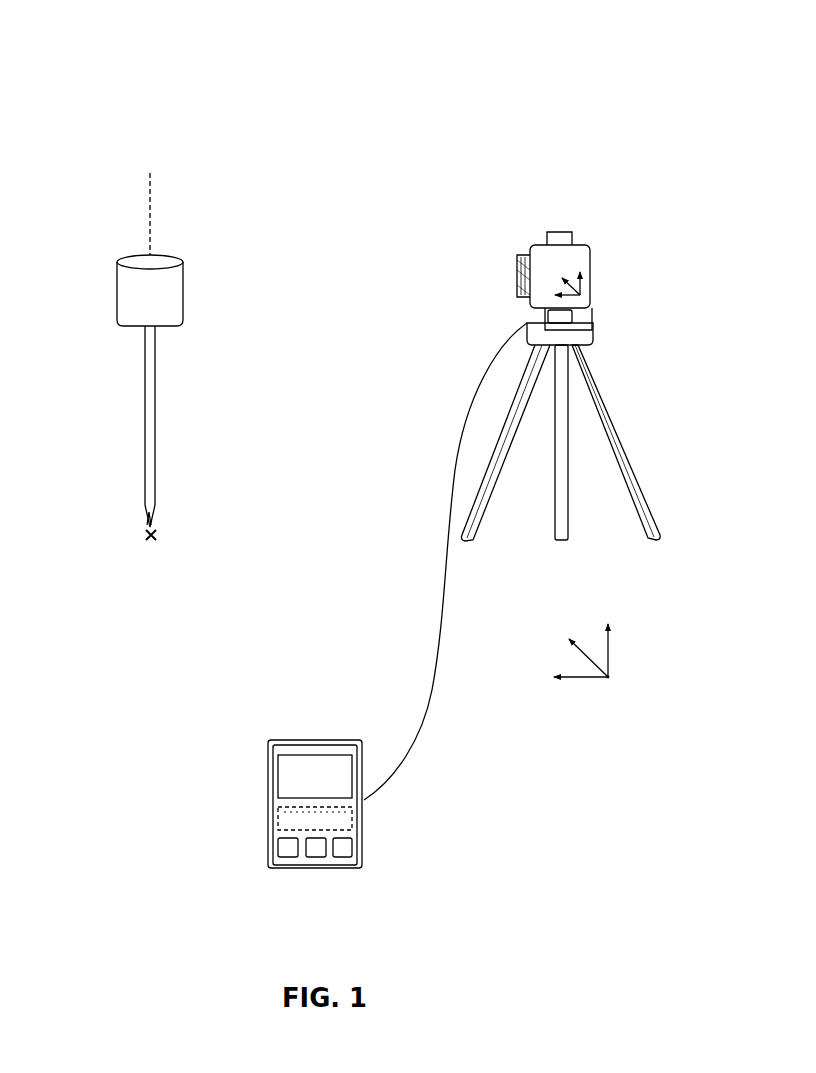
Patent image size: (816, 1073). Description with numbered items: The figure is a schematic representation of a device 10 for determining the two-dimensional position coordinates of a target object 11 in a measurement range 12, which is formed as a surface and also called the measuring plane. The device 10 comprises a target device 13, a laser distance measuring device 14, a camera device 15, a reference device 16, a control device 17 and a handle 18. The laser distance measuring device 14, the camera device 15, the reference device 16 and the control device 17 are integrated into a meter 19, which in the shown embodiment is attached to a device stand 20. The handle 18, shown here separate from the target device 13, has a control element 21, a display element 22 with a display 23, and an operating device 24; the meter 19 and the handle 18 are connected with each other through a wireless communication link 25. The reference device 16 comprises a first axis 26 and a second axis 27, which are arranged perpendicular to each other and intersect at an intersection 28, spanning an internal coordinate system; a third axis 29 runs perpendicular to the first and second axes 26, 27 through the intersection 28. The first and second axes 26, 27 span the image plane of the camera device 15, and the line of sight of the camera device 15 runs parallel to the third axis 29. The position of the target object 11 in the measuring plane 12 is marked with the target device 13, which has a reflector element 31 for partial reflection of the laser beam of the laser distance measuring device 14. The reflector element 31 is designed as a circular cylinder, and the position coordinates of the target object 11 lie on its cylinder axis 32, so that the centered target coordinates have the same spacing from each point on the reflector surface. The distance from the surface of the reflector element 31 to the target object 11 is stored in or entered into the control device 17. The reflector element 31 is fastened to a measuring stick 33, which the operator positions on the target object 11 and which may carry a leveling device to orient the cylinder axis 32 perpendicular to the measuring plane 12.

The device 10 is at (290, 96).
The target object 11 is at (160, 524).
The measurement range 12 is at (343, 350).
The target device 13 is at (118, 212).
The laser distance measuring device 14 is at (505, 258).
The camera device 15 is at (578, 243).
The reference device 16 is at (586, 283).
The control device 17 is at (575, 315).
The handle 18 is at (312, 725).
The meter 19 is at (558, 155).
The device stand 20 is at (612, 420).
The control element 21 is at (330, 818).
The display element 22 is at (277, 776).
The display 23 is at (315, 776).
The operating device 24 is at (277, 852).
The wireless communication link 25 is at (431, 703).
The first axis 26 is at (578, 647).
The second axis 27 is at (608, 640).
The intersection 28 is at (617, 687).
The third axis 29 is at (568, 680).
The reflector element 31 is at (174, 287).
The cylinder axis 32 is at (152, 207).
The measuring stick 33 is at (148, 410).